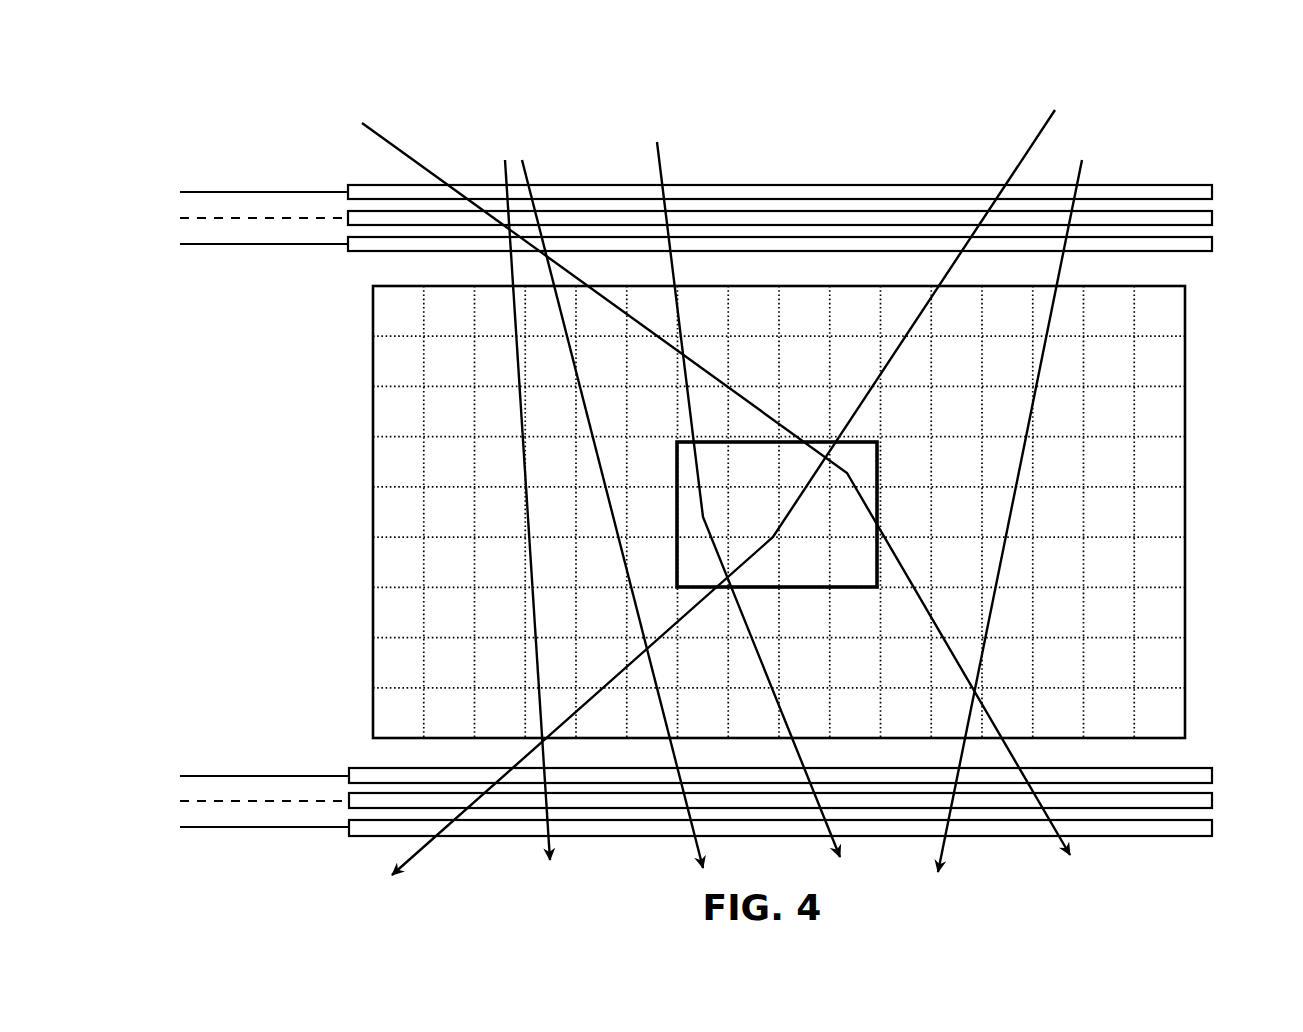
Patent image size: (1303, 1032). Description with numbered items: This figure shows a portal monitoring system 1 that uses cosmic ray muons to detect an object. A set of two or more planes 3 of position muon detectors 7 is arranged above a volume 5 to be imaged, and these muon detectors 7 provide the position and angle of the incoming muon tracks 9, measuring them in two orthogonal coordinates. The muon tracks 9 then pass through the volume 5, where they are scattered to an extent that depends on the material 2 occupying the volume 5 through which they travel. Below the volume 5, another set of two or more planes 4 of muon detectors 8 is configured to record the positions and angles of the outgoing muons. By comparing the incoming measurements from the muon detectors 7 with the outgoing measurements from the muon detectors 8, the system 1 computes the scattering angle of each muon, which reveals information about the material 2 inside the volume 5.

The system 1 is at (1258, 124).
The material 2 is at (853, 591).
The planes 3 is at (262, 243).
The planes 4 is at (262, 827).
The volume 5 is at (1184, 527).
The muon detectors 7 is at (1218, 245).
The muon detectors 8 is at (1219, 777).
The muon tracks 9 is at (662, 157).